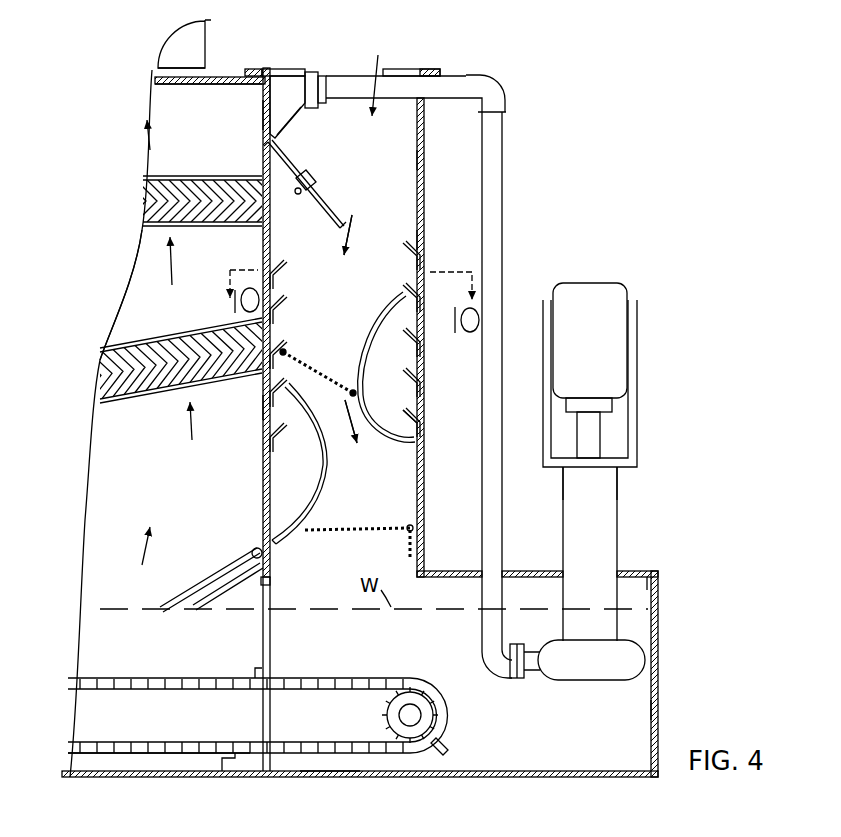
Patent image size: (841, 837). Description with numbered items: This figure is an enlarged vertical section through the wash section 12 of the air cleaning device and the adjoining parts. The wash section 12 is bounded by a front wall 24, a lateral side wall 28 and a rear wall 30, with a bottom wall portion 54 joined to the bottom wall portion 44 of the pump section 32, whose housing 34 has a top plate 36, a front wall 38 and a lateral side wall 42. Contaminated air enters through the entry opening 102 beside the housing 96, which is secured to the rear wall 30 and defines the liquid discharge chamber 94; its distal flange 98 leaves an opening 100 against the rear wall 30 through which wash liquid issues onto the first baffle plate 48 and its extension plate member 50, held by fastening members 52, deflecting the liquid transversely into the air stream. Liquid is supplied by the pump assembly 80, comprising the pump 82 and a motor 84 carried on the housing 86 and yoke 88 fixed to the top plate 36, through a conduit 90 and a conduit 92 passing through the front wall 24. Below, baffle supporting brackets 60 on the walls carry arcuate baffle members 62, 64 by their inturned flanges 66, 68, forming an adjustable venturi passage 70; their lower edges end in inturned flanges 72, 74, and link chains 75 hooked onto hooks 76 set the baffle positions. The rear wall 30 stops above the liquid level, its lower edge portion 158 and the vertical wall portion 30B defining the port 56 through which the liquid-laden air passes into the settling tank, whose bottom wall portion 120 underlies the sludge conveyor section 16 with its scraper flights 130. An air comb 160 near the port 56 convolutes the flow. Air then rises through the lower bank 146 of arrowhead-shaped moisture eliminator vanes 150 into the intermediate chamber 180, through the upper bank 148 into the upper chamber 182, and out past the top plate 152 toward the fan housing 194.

The wash section 12 is at (425, 150).
The sludge conveyor section 16 is at (222, 76).
The front wall 24 is at (424, 200).
The lateral side wall 28 is at (423, 236).
The rear wall 30 is at (276, 250).
The vertical wall portion 30B is at (271, 641).
The pump section 32 is at (622, 482).
The housing 34 is at (660, 593).
The top plate 36 is at (523, 570).
The front wall 38 is at (659, 706).
The lateral side wall 42 is at (640, 572).
The bottom wall portion 44 is at (575, 778).
The first baffle plate 48 is at (292, 168).
The extension plate member 50 is at (345, 222).
The fastening members 52 is at (318, 190).
The bottom wall portion 54 is at (312, 778).
The port 56 is at (271, 584).
The baffle supporting brackets 60 is at (284, 280).
The baffle member 62 is at (360, 340).
The baffle member 64 is at (324, 422).
The inturned flange 66 is at (424, 290).
The inturned flange 68 is at (272, 408).
The venturi passage 70 is at (352, 455).
The inturned flange 72 is at (420, 428).
The inturned flange 74 is at (279, 536).
The link chains 75 is at (292, 352).
The hooks 76 is at (414, 518).
The pump assembly 80 is at (640, 330).
The pump 82 is at (640, 652).
The motor 84 is at (600, 296).
The housing 86 is at (598, 516).
The yoke 88 is at (640, 405).
The conduit 90 is at (503, 276).
The conduit 92 is at (463, 74).
The liquid discharge chamber 94 is at (310, 74).
The housing 96 is at (283, 82).
The flange 98 is at (303, 113).
The opening 100 is at (264, 114).
The entry opening 102 is at (388, 69).
The bottom wall portion 120 is at (120, 778).
The scraper flights 130 is at (256, 672).
The lower bank of moisture eliminator vanes 146 is at (120, 405).
The upper bank of moisture eliminator vanes 148 is at (186, 228).
The moisture eliminator vanes 150 is at (210, 178).
The top plate 152 is at (160, 63).
The lower edge portion 158 is at (265, 556).
The air comb 160 is at (222, 564).
The intermediate chamber 180 is at (140, 305).
The upper chamber 182 is at (142, 108).
The fan housing 194 is at (212, 29).